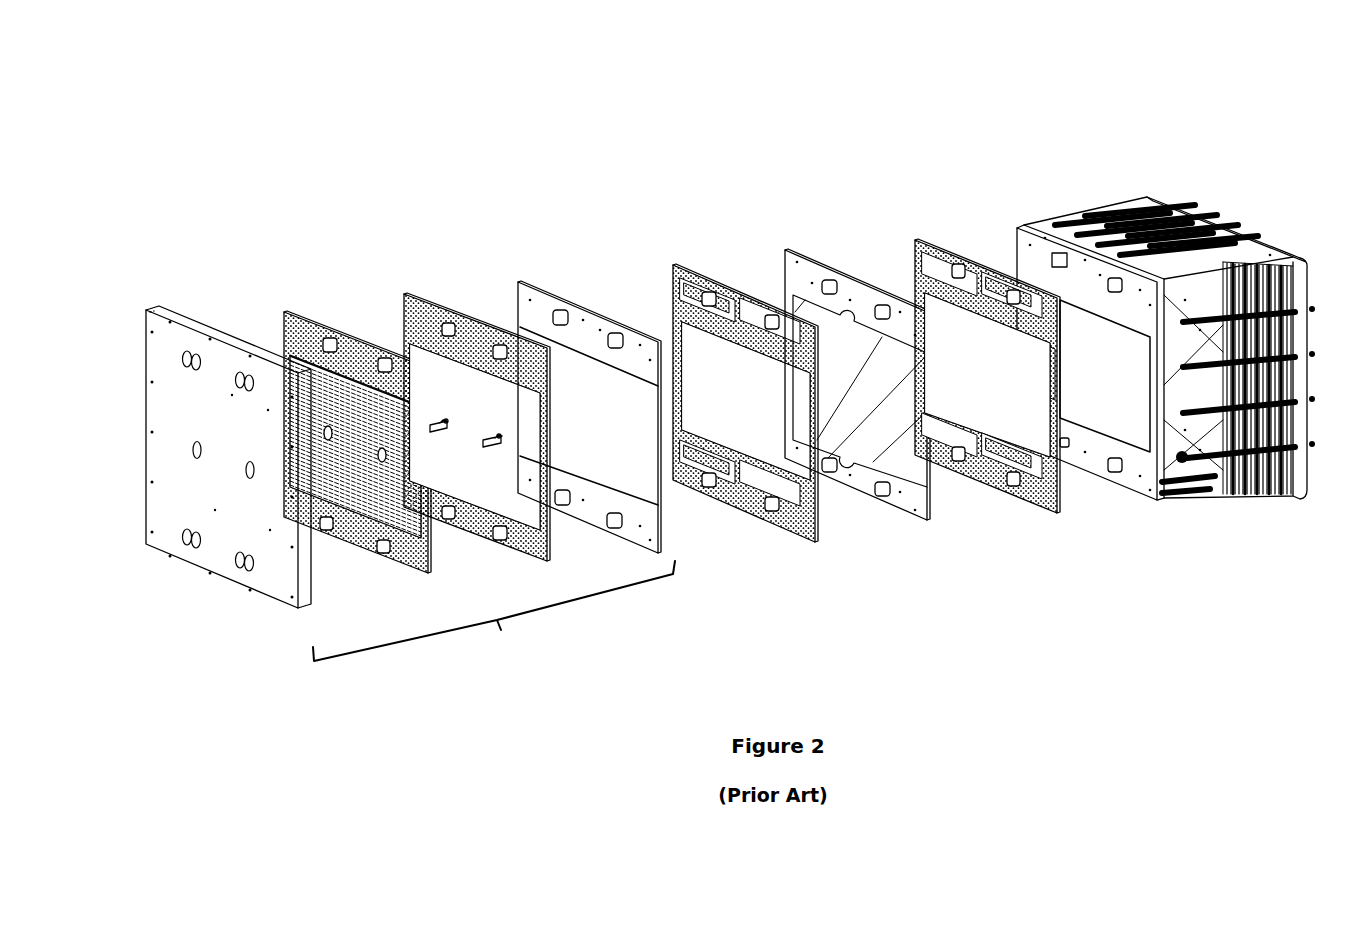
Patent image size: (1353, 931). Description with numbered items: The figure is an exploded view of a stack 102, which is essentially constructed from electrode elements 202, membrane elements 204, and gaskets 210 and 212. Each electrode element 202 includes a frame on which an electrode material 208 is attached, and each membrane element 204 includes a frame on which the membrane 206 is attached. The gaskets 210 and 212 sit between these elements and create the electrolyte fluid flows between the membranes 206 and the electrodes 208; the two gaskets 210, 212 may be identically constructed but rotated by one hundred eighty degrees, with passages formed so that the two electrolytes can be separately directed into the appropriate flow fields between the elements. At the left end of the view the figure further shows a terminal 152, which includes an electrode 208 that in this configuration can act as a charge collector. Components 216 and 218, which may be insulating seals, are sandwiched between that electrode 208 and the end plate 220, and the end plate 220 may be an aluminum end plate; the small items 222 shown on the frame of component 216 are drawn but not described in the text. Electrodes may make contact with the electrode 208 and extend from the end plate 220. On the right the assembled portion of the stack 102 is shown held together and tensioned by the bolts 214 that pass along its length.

The stack 102 is at (245, 140).
The terminal 152 is at (508, 647).
The electrode element 202 is at (515, 280).
The membrane element 204 is at (800, 250).
The membrane 206 is at (910, 450).
The electrode material 208 is at (612, 428).
The gasket 210 is at (675, 260).
The gasket 212 is at (930, 238).
The bolt 214 is at (1222, 385).
The component 216 is at (405, 298).
The component 218 is at (288, 310).
The end plate 220 is at (150, 312).
The terminal clips 222 is at (497, 440).